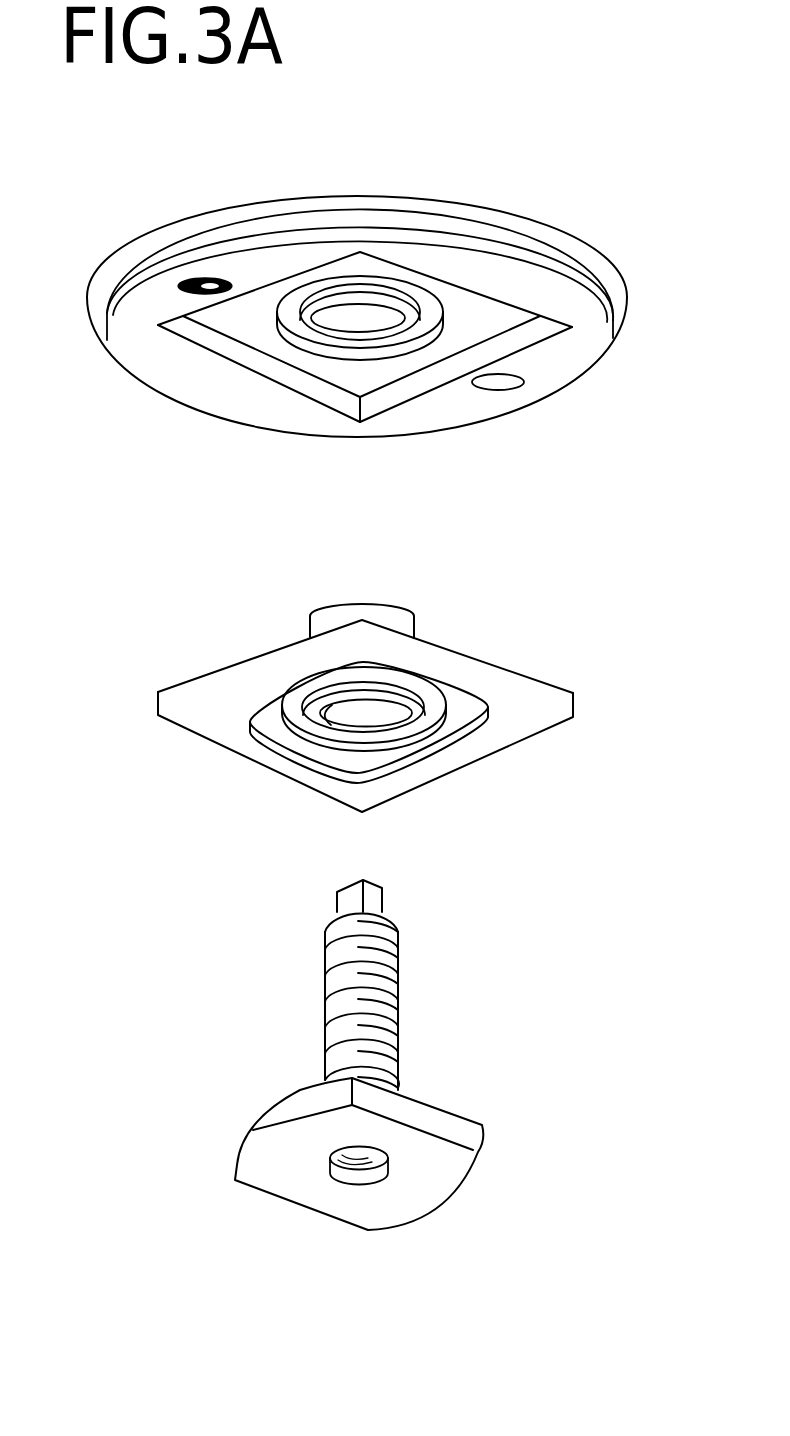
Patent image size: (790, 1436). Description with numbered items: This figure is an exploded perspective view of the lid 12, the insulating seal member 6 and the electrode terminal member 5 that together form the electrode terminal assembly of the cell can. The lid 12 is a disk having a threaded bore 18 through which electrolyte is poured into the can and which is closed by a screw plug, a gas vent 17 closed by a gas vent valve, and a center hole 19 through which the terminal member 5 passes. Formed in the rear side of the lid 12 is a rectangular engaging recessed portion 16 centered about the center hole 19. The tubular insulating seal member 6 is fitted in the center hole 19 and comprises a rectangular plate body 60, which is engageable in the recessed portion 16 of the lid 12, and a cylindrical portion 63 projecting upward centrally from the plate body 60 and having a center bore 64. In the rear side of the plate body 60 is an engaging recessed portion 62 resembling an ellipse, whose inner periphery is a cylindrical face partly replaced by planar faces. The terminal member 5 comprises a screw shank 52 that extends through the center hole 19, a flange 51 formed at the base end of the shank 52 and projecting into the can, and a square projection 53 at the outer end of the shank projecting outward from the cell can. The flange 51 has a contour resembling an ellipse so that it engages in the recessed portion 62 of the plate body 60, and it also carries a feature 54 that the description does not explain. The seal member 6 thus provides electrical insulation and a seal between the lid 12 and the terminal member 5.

The lid 12 is at (543, 233).
The rectangular engaging recessed portion 16 is at (200, 338).
The gas vent 17 is at (505, 385).
The threaded bore 18 is at (200, 282).
The center hole 19 is at (382, 323).
The tubular insulating seal member 6 is at (362, 695).
The rectangular plate body 60 is at (212, 675).
The engaging recessed portion 62 is at (476, 719).
The cylindrical portion 63 is at (383, 613).
The center bore 64 is at (328, 714).
The electrode terminal member 5 is at (389, 1075).
The flange 51 is at (422, 1172).
The screw shank 52 is at (382, 1038).
The square projection 53 is at (378, 893).
The hole 54 is at (367, 1175).